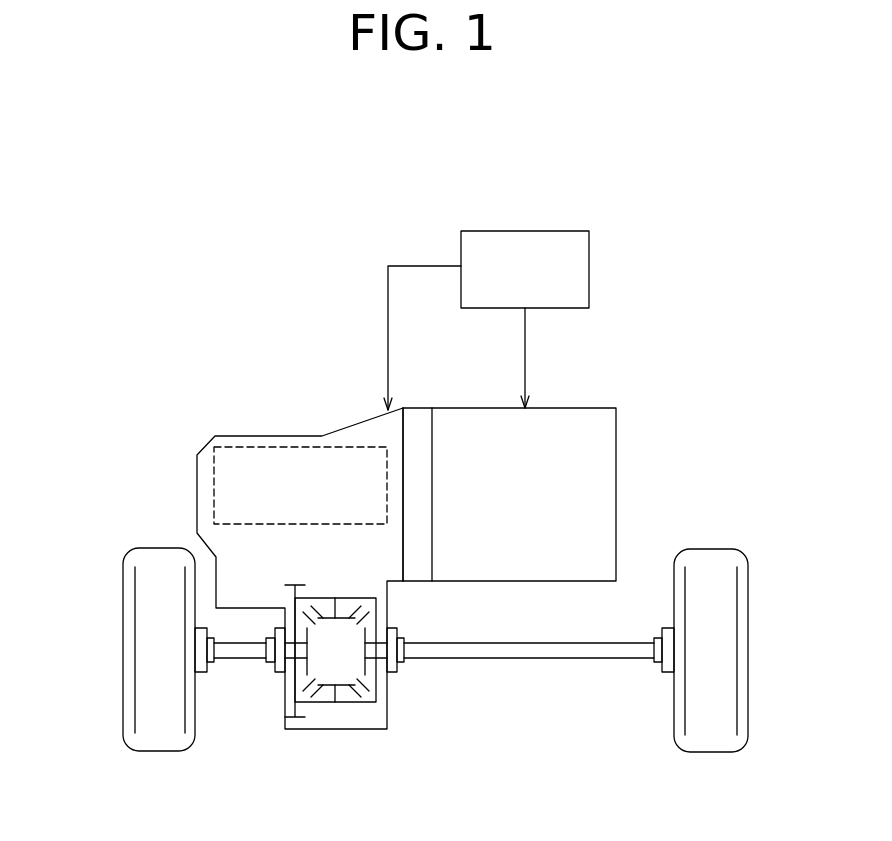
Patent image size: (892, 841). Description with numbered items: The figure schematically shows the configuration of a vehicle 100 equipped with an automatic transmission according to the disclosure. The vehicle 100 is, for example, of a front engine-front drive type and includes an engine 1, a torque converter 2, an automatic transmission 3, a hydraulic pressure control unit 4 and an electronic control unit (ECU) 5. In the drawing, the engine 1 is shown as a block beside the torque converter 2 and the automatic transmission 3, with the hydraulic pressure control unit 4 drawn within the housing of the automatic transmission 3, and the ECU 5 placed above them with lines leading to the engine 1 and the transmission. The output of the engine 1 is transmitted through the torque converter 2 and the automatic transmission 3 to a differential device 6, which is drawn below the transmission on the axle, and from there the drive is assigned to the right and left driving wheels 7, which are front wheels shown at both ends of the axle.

The vehicle 100 is at (660, 345).
The engine 1 is at (616, 445).
The torque converter 2 is at (415, 415).
The automatic transmission 3 is at (212, 533).
The hydraulic pressure control unit 4 is at (215, 480).
The electronic control unit (ECU) 5 is at (552, 231).
The differential device 6 is at (330, 714).
The driving wheels 7 is at (123, 600).